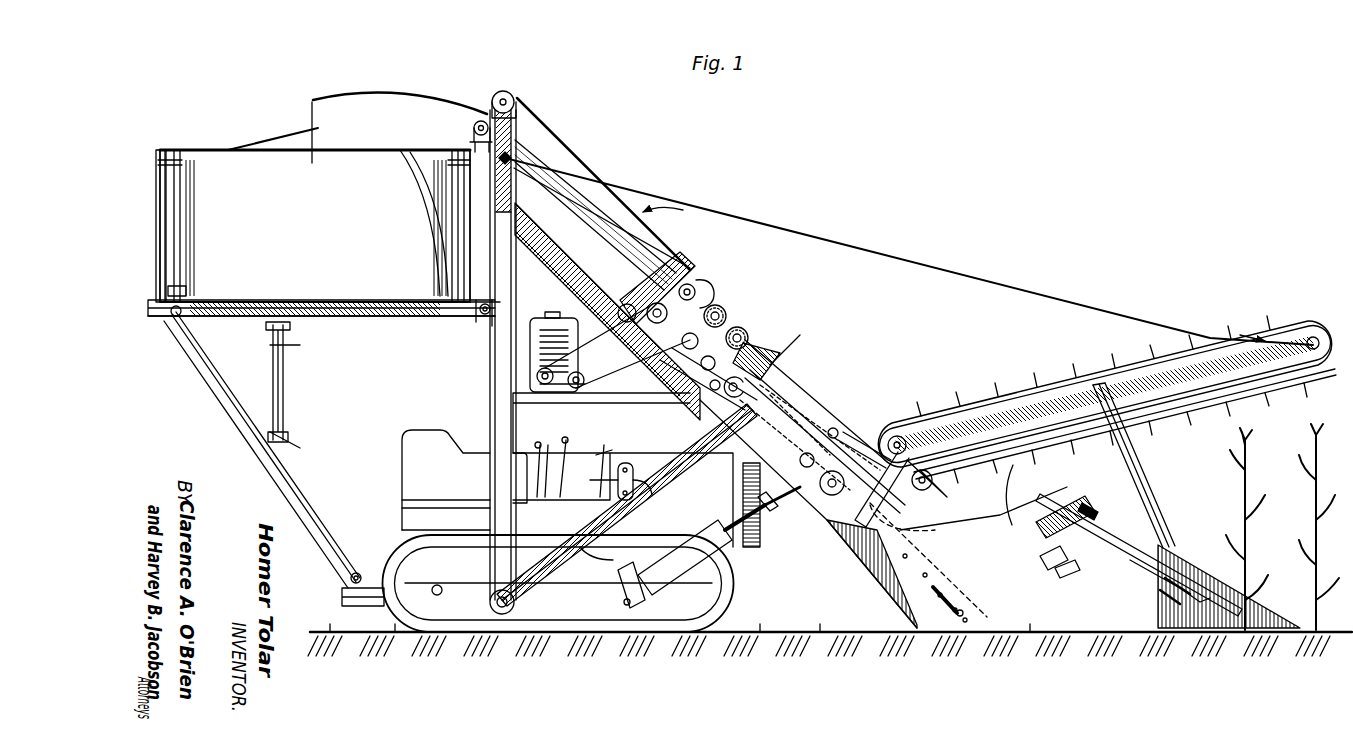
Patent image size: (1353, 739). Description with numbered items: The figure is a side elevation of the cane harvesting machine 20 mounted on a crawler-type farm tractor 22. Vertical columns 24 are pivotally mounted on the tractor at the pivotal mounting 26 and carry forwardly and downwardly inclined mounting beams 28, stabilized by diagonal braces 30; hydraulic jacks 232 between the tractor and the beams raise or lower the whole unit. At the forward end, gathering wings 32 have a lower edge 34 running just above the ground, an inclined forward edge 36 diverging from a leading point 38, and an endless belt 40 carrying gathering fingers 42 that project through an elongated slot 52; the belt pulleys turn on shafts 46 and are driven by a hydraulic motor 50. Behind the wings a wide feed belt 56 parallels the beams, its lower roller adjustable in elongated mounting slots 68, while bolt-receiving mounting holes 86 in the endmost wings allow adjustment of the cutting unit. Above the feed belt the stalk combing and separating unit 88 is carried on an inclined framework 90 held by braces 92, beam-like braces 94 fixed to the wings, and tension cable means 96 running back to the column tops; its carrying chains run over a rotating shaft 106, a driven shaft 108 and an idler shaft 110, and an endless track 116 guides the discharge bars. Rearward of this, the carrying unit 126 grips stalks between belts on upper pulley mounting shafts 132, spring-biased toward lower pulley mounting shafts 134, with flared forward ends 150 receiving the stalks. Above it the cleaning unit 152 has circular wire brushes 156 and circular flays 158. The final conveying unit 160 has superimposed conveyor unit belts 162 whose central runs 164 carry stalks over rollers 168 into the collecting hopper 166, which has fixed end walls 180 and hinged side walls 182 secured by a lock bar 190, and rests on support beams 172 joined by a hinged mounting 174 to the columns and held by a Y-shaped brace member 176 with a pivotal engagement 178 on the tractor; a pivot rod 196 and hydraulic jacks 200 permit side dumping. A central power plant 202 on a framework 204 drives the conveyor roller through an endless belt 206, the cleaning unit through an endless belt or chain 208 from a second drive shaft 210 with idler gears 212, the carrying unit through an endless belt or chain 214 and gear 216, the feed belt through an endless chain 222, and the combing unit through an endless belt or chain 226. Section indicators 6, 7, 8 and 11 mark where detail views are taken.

The cane harvesting machine 20 is at (718, 190).
The crawler-type farm tractor 22 is at (437, 423).
The vertical columns 24 is at (492, 359).
The pivotal mounting 26 is at (515, 602).
The mounting beams 28 is at (566, 278).
The diagonal braces 30 is at (642, 514).
The gathering wings 32 is at (1252, 600).
The lower edge 34 is at (1096, 634).
The inclined forward edge 36 is at (1227, 557).
The leading point 38 is at (1305, 633).
The endless belt 40 is at (1112, 548).
The gathering fingers 42 is at (1164, 582).
The shafts 46 is at (1090, 505).
The hydraulic motor 50 is at (1050, 563).
The elongated slot 52 is at (1308, 612).
The feed belt 56 is at (924, 535).
The elongated mounting slots 68 is at (948, 602).
The bolt-receiving mounting holes 86 is at (930, 612).
The stalk combing and separating unit 88 is at (1040, 372).
The framework 90 is at (966, 425).
The braces 92 is at (837, 520).
The beam-like braces 94 is at (1142, 520).
The tension cable means 96 is at (985, 280).
The rotating shaft 106 is at (1301, 330).
The driven shaft 108 is at (905, 440).
The idler shaft 110 is at (950, 466).
The endless track 116 is at (1007, 498).
The carrying unit 126 is at (838, 404).
The upper pulley mounting shafts 132 is at (782, 384).
The lower pulley mounting shafts 134 is at (792, 404).
The flared forward ends 150 is at (840, 432).
The cleaning unit 152 is at (745, 306).
The circular wire brushes 156 is at (760, 345).
The circular flays 158 is at (728, 304).
The final conveying unit 160 is at (598, 170).
The conveyor unit belts 162 is at (611, 218).
The central runs 164 is at (598, 242).
The collecting hopper 166 is at (225, 150).
The rollers 168 is at (474, 126).
The support beams 172 is at (328, 300).
The hinged mounting 174 is at (472, 318).
The Y-shaped brace member 176 is at (232, 415).
The pivotal engagement 178 is at (368, 558).
The fixed end walls 180 is at (165, 243).
The side walls 182 is at (352, 165).
The lock bar 190 is at (178, 293).
The pivot rod 196 is at (378, 318).
The hydraulic jacks 200 is at (288, 400).
The central power plant 202 is at (590, 306).
The framework 204 is at (543, 385).
The endless belt 206 is at (594, 340).
The endless belt or chain 208 is at (598, 382).
The second drive shaft 210 is at (576, 390).
The idler gears 212 is at (735, 400).
The endless belt or chain 214 is at (648, 400).
The gear 216 is at (773, 398).
The endless chain 222 is at (770, 504).
The endless belt or chain 226 is at (862, 442).
The hydraulic jacks 232 is at (718, 578).
The section line 6 is at (770, 340).
The section line 7 is at (1137, 598).
The section line 8 is at (1113, 333).
The section line 11 is at (332, 117).